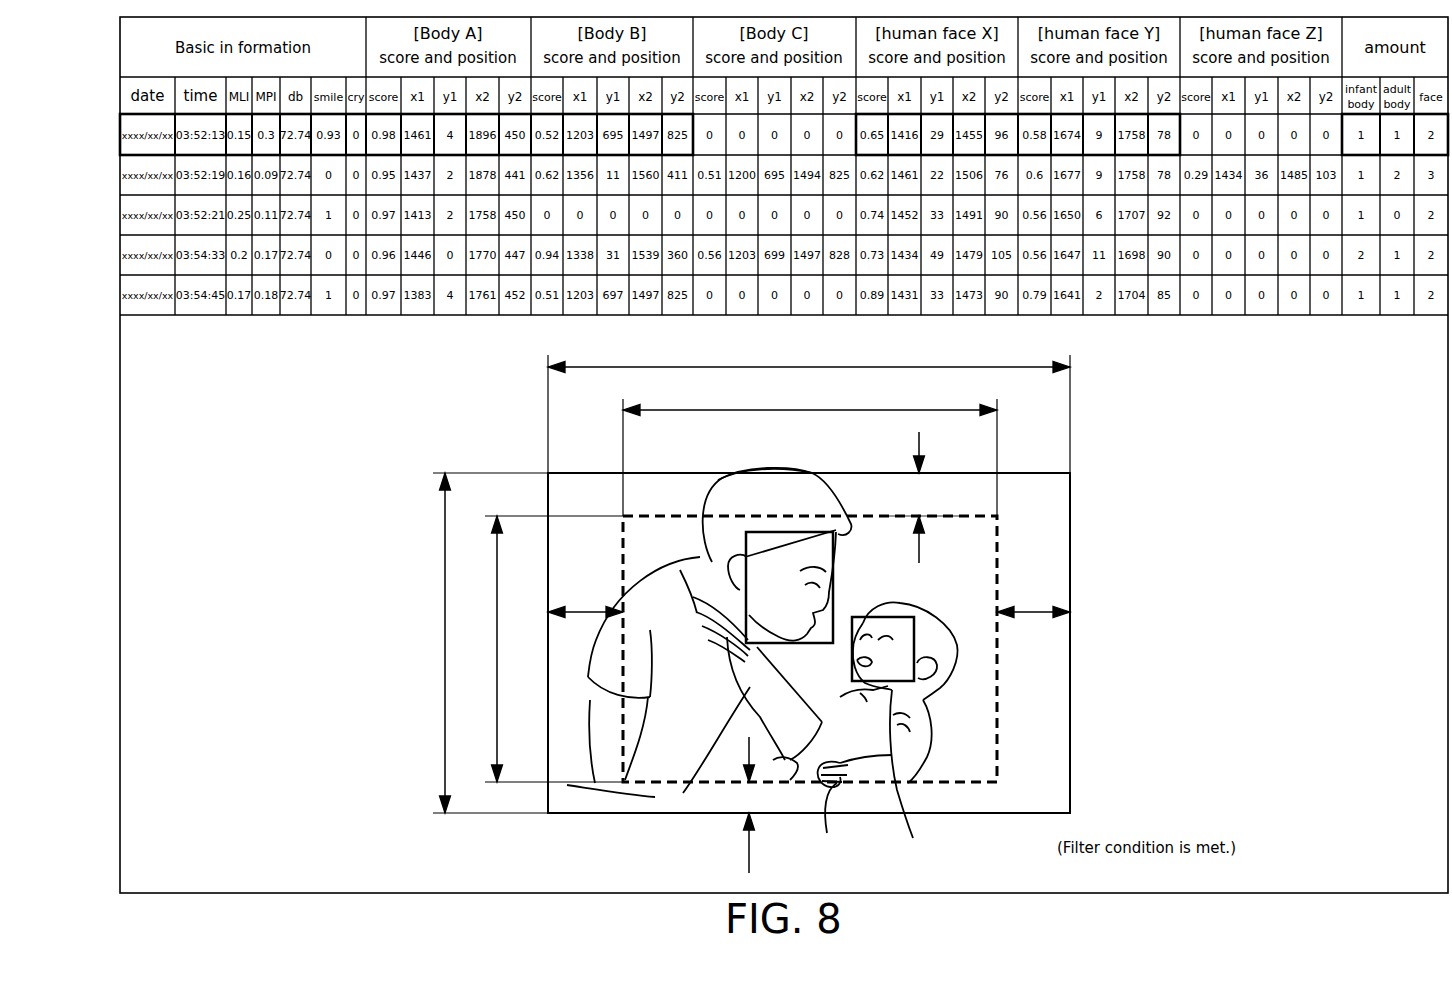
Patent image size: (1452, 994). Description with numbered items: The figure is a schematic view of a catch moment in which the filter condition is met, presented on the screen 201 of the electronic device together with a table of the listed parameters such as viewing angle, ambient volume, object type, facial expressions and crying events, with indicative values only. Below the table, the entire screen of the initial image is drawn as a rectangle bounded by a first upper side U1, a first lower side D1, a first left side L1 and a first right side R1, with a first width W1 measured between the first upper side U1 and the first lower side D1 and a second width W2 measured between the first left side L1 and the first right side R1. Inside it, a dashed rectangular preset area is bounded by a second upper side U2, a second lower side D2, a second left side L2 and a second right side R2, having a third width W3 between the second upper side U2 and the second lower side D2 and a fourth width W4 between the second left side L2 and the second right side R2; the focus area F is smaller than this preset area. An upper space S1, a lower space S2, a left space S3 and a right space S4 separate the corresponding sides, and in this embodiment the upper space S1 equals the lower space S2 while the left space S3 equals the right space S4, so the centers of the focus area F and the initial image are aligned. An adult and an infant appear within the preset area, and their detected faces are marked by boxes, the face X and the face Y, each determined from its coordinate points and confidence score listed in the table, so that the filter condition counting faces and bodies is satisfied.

The screen 201 is at (1218, 895).
The first right side R1 is at (1070, 530).
The second right side R2 is at (1002, 690).
The focus area F is at (870, 649).
The face X is at (833, 588).
The face Y is at (890, 739).
The first upper side U1 is at (740, 472).
The second upper side U2 is at (893, 505).
The first left side L1 is at (548, 568).
The second left side L2 is at (620, 705).
The first lower side D1 is at (683, 815).
The second lower side D2 is at (827, 822).
The first width W1 is at (476, 643).
The second width W2 is at (809, 409).
The third width W3 is at (541, 649).
The fourth width W4 is at (810, 452).
The upper space S1 is at (932, 497).
The lower space S2 is at (762, 805).
The left space S3 is at (585, 601).
The right space S4 is at (1033, 601).